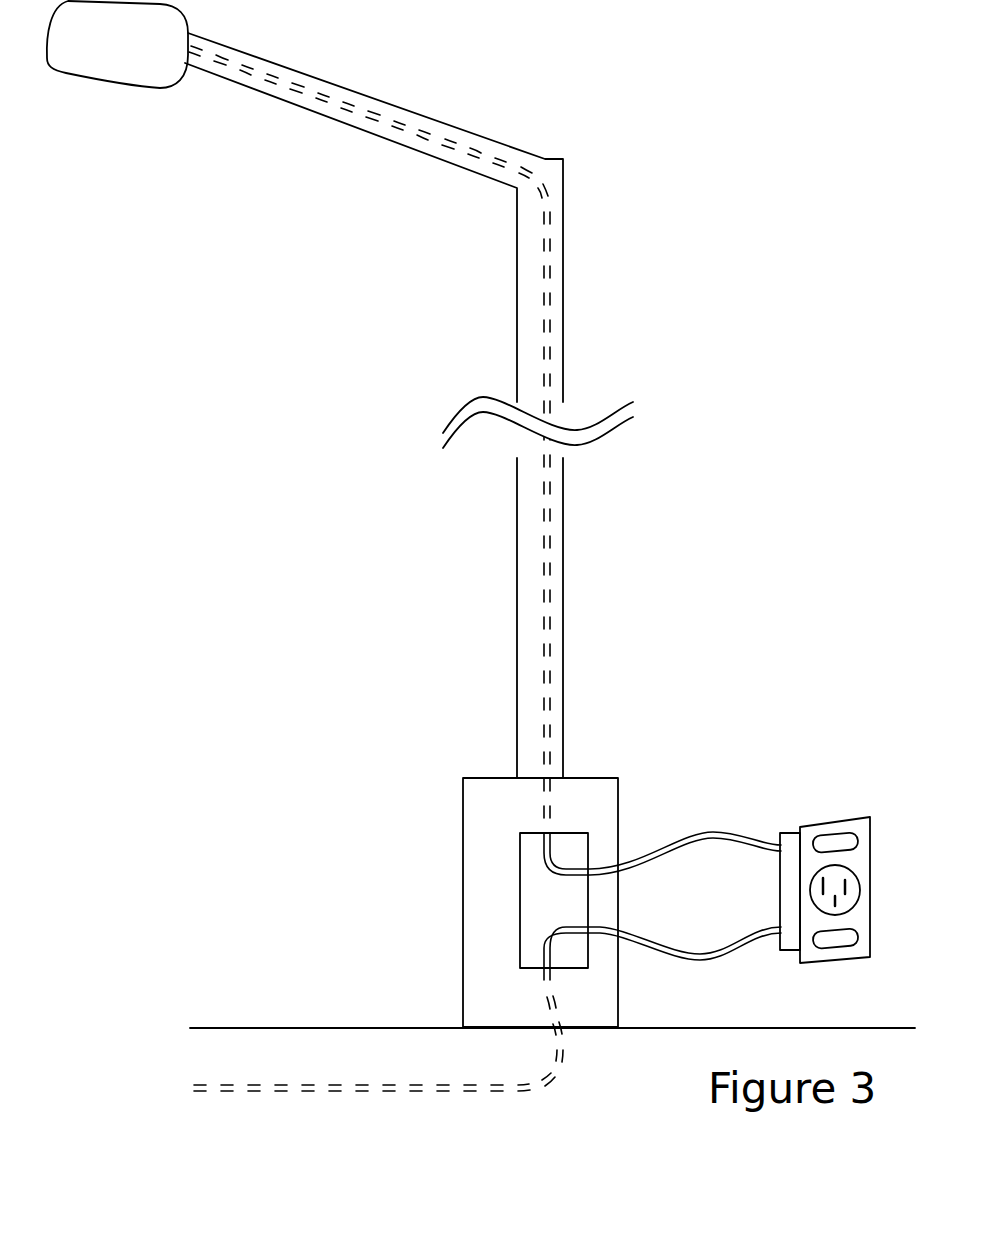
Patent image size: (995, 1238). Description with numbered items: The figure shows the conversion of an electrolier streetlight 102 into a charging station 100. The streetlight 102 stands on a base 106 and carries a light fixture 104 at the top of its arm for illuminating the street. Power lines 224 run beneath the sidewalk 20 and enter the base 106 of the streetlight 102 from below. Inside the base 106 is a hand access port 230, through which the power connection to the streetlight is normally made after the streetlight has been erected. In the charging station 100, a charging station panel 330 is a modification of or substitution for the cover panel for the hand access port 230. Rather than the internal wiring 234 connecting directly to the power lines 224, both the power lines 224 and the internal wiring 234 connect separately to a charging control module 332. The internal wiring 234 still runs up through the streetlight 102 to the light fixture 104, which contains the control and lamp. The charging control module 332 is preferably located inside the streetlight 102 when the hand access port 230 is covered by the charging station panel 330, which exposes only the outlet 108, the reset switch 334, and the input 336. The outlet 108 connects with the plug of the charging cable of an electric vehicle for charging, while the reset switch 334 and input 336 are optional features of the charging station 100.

The charging station 100 is at (820, 994).
The streetlight 102 is at (565, 207).
The light fixture 104 is at (142, 85).
The base 106 is at (593, 777).
The outlet 108 is at (853, 872).
The sidewalk 20 is at (420, 1027).
The power lines 224 is at (708, 959).
The hand access port 230 is at (530, 833).
The internal wiring 234 is at (380, 123).
The charging station panel 330 is at (815, 822).
The charging control module 332 is at (780, 915).
The reset switch 334 is at (858, 838).
The input 336 is at (858, 930).